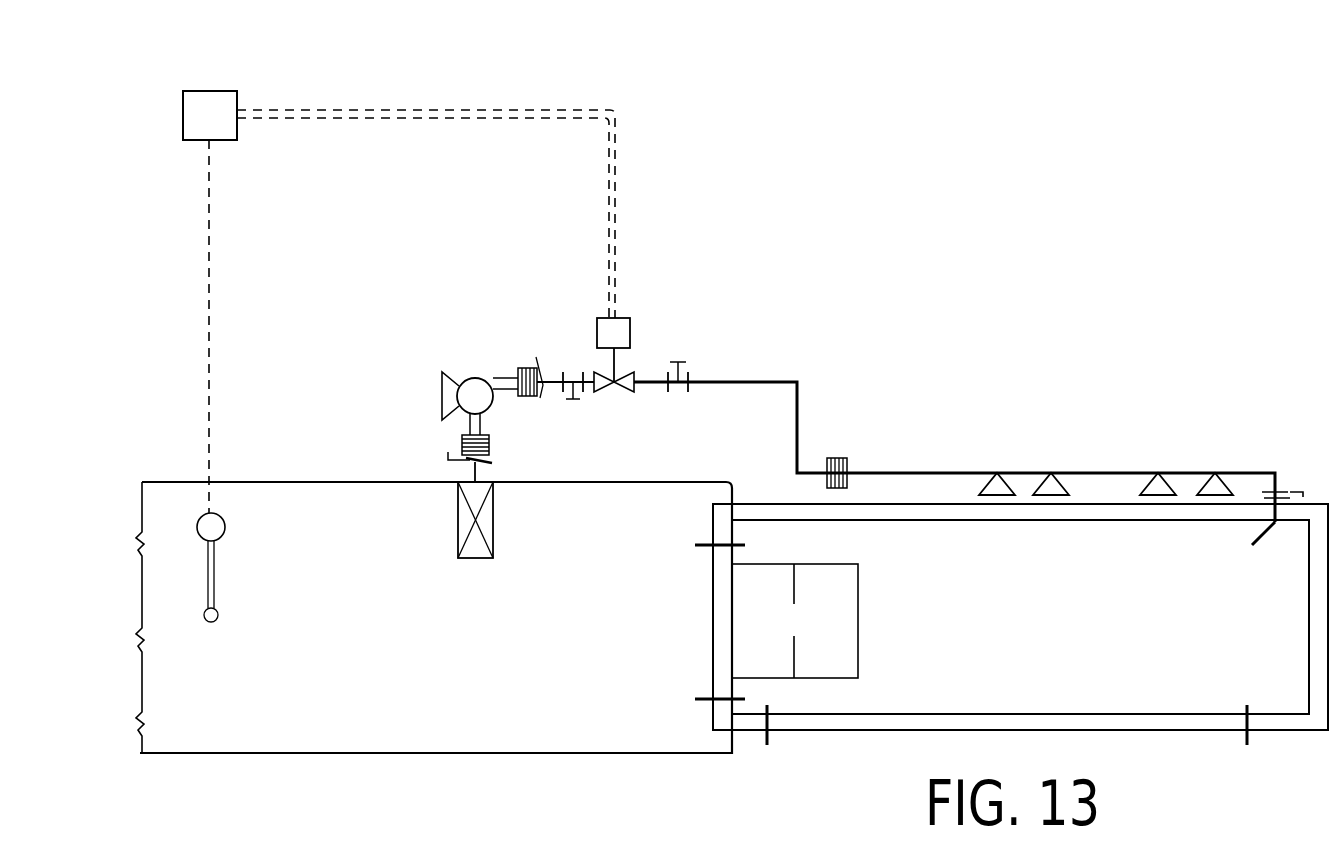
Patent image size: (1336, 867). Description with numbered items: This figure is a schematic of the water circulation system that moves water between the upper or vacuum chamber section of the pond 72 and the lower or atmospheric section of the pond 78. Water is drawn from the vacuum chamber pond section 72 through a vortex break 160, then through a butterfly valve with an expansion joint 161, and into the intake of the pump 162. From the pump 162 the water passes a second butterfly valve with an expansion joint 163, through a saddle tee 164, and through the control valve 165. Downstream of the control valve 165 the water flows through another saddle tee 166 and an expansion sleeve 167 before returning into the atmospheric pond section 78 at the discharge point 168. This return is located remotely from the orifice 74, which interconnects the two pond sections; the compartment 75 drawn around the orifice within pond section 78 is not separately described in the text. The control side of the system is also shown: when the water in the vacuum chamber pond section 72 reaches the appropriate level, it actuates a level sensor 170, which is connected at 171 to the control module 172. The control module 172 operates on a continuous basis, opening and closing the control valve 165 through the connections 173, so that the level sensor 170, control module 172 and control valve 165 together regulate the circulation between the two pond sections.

The vacuum chamber pond section 72 is at (459, 712).
The orifice 74 is at (795, 620).
The compartment 75 is at (858, 578).
The atmospheric pond section 78 is at (1152, 680).
The vortex break 160 is at (496, 512).
The butterfly valve with an expansion joint 161 is at (462, 441).
The pump 162 is at (475, 378).
The butterfly valve with an expansion joint 163 is at (525, 365).
The saddle tee 164 is at (573, 399).
The control valve 165 is at (636, 348).
The saddle tee 166 is at (690, 368).
The expansion sleeve 167 is at (838, 458).
The return discharge 168 is at (1270, 525).
The level sensor 170 is at (220, 614).
The connection 171 is at (209, 228).
The control module 172 is at (238, 97).
The connections 173 is at (617, 183).